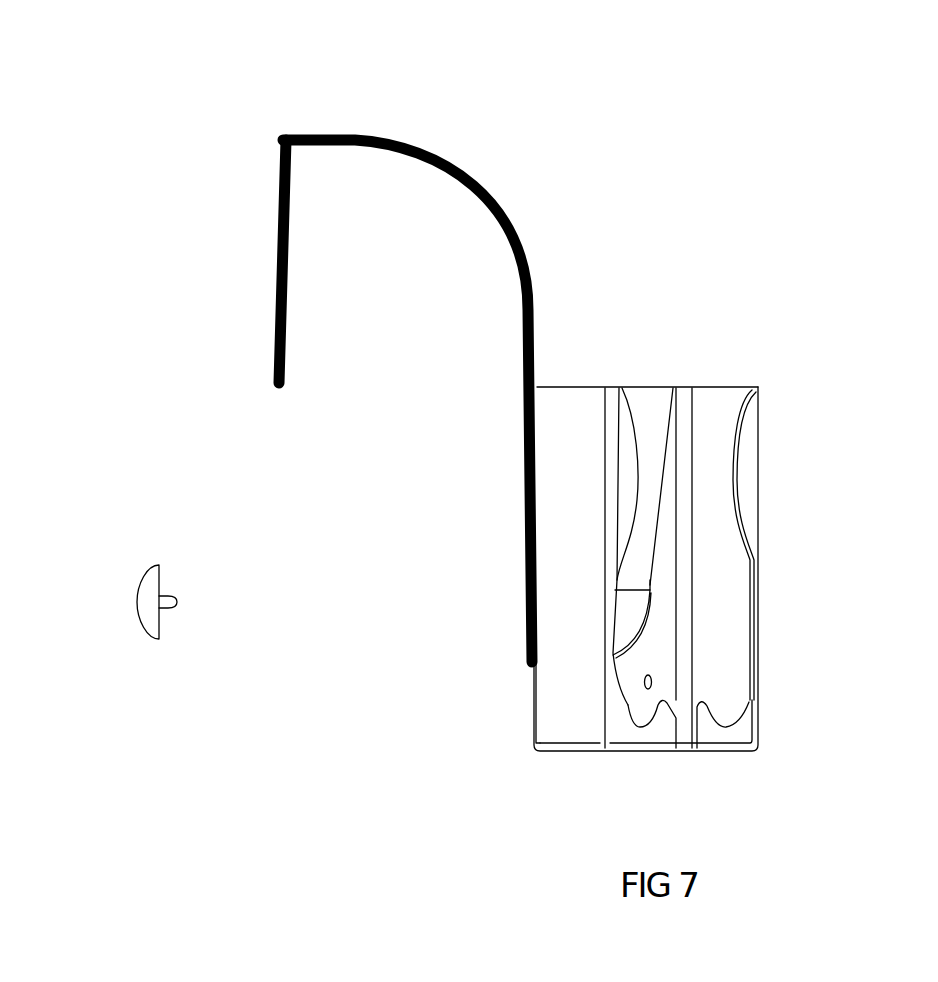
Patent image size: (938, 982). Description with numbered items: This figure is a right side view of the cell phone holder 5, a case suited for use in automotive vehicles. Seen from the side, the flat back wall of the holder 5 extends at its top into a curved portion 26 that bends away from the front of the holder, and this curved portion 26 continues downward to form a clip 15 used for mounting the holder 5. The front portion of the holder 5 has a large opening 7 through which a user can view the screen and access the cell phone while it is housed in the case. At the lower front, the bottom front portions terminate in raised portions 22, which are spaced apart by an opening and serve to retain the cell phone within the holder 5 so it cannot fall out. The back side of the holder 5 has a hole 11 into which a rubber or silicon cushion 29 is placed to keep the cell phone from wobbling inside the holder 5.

The curved portion 26 is at (363, 137).
The clip 15 is at (279, 258).
The large opening 7 is at (707, 392).
The cell phone holder 5 is at (748, 469).
The hole 11 is at (652, 677).
The raised portions 22 is at (652, 701).
The cushion 29 is at (137, 598).